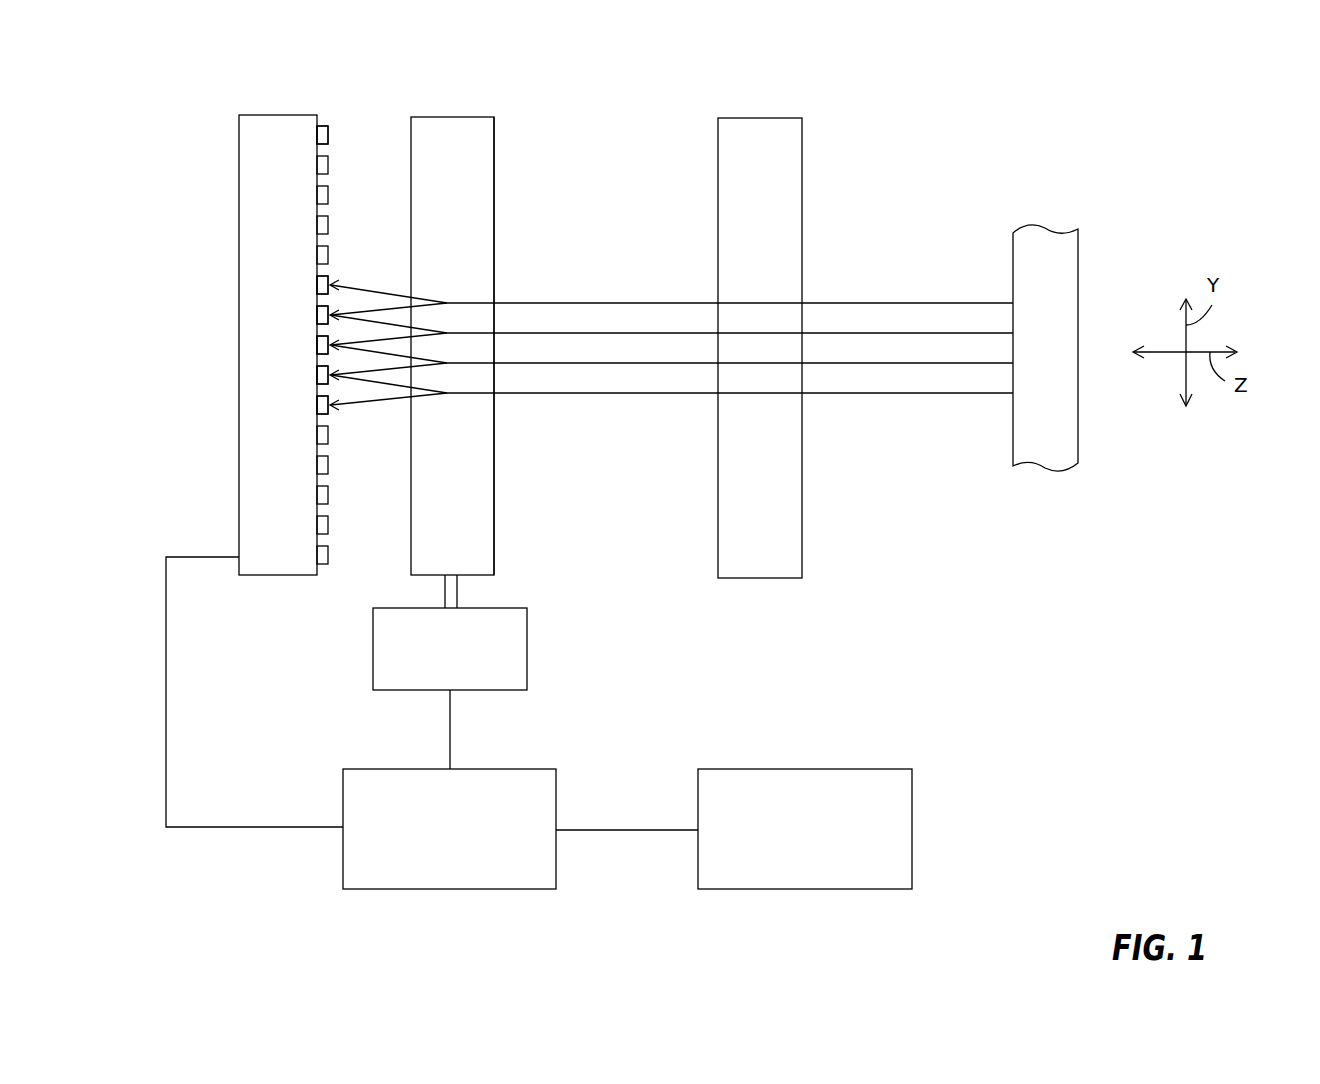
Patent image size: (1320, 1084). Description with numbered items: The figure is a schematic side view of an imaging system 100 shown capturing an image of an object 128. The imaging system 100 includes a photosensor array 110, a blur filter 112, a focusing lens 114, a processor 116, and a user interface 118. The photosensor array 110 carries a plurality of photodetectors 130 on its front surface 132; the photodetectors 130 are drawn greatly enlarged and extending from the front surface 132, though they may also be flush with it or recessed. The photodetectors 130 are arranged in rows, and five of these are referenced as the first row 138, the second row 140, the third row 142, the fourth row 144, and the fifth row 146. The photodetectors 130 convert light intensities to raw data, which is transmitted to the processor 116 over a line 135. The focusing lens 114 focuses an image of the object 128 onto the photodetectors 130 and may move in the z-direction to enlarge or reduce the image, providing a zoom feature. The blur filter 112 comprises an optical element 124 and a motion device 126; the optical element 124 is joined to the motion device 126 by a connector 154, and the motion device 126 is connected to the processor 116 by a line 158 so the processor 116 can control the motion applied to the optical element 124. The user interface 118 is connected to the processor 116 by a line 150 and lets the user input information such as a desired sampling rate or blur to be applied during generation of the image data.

The imaging system 100 is at (848, 92).
The photosensor array 110 is at (278, 110).
The blur filter 112 is at (450, 110).
The focusing lens 114 is at (718, 232).
The processor 116 is at (397, 768).
The user interface 118 is at (752, 769).
The optical element 124 is at (494, 188).
The motion device 126 is at (527, 648).
The object 128 is at (1013, 253).
The photodetectors 130 is at (323, 111).
The front surface 132 is at (318, 152).
The line 135 is at (166, 690).
The first row 138 is at (317, 286).
The second row 140 is at (317, 316).
The third row 142 is at (317, 346).
The fourth row 144 is at (317, 376).
The fifth row 146 is at (317, 406).
The line 150 is at (629, 832).
The connector 154 is at (457, 590).
The line 158 is at (450, 723).